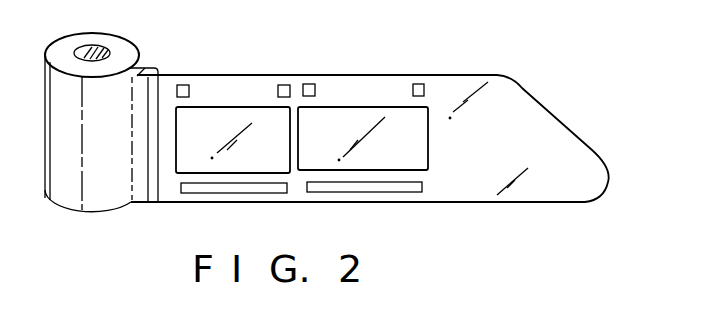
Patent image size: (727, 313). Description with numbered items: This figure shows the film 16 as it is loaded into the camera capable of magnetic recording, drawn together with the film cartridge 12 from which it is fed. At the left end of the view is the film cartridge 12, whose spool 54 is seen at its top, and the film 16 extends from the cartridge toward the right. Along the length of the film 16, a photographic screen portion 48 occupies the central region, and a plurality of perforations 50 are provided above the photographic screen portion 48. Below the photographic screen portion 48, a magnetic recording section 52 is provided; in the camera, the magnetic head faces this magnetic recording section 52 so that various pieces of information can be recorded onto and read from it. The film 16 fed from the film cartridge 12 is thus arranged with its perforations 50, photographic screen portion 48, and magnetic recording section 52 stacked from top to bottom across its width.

The film cartridge 12 is at (90, 197).
The film 16 is at (465, 75).
The photographic screen portion 48 is at (420, 163).
The perforations 50 is at (308, 84).
The magnetic recording section 52 is at (318, 190).
The spool 54 is at (133, 29).